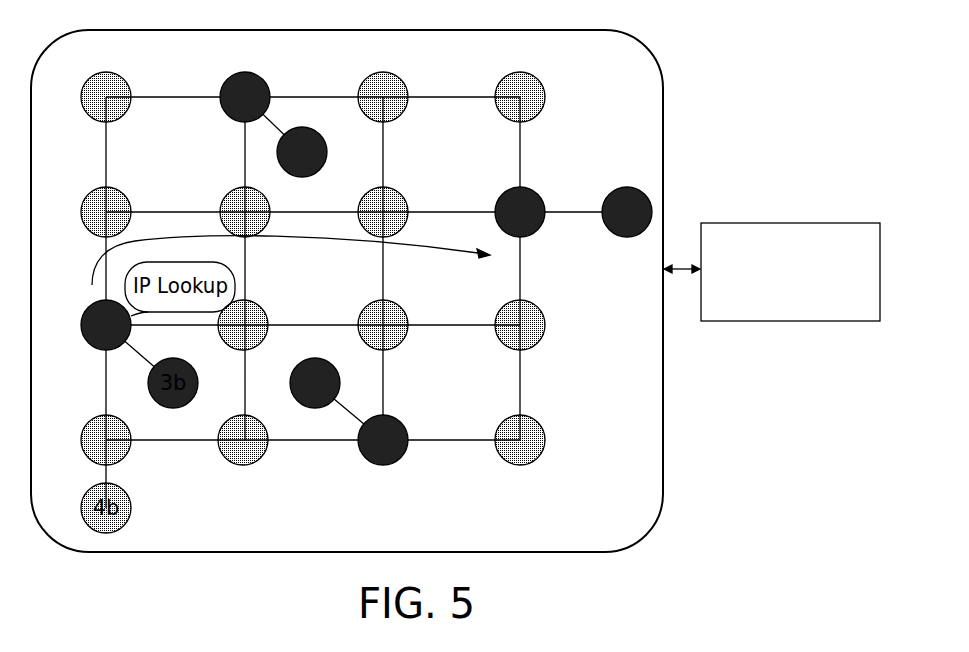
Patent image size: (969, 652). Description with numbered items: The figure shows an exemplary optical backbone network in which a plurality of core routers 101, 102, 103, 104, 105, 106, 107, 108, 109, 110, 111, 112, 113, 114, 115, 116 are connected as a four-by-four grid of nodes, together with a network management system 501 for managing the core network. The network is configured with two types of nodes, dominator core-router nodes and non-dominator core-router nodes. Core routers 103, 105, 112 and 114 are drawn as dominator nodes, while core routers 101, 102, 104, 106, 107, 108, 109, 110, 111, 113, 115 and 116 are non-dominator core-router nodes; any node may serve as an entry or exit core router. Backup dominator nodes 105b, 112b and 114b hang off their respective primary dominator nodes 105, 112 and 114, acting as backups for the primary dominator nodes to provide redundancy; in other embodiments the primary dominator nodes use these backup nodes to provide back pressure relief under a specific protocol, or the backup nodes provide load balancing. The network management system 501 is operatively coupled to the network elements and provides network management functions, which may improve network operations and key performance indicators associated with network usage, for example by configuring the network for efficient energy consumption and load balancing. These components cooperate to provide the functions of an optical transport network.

The core router 101 is at (108, 72).
The core router 102 is at (89, 194).
The core router 103 is at (88, 309).
The core router 104 is at (88, 424).
The core router 105 is at (227, 83).
The backup dominator node 105b is at (293, 176).
The core router 106 is at (226, 194).
The core router 107 is at (272, 292).
The core router 108 is at (248, 464).
The core router 109 is at (405, 83).
The core router 110 is at (403, 194).
The core router 111 is at (402, 307).
The core router 112 is at (381, 464).
The backup dominator node 112b is at (325, 407).
The core router 113 is at (504, 81).
The core router 114 is at (532, 191).
The backup dominator node 114b is at (625, 237).
The core router 115 is at (508, 347).
The core router 116 is at (506, 419).
The network management system 501 is at (787, 322).